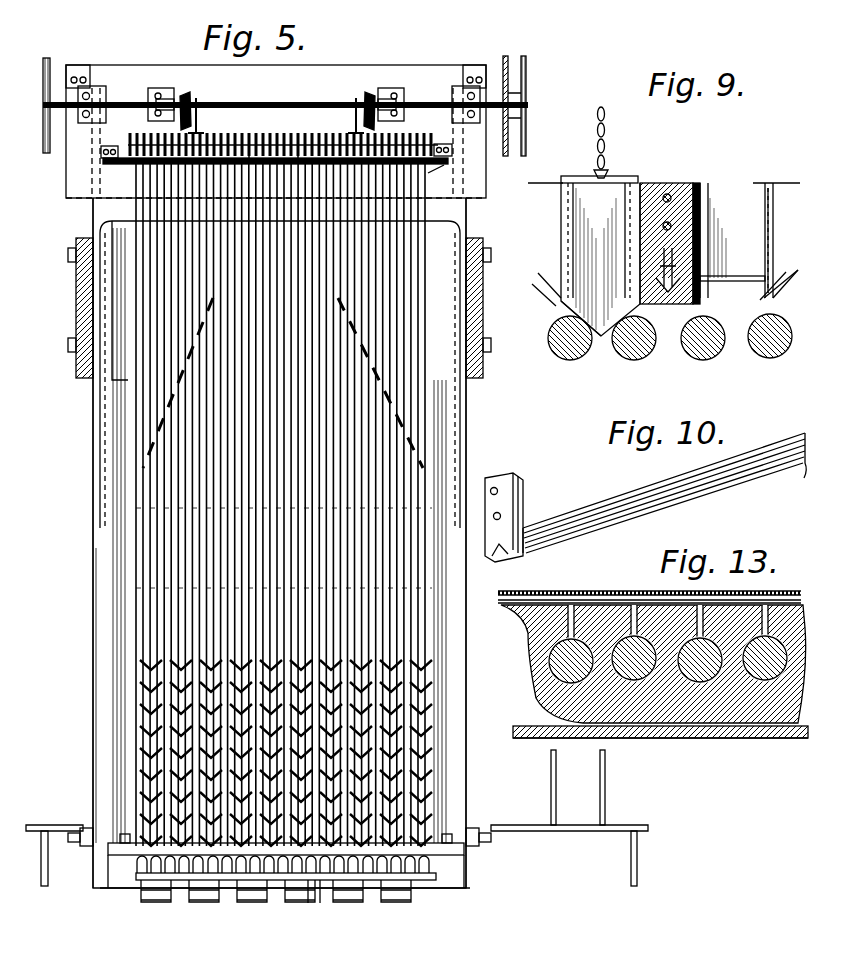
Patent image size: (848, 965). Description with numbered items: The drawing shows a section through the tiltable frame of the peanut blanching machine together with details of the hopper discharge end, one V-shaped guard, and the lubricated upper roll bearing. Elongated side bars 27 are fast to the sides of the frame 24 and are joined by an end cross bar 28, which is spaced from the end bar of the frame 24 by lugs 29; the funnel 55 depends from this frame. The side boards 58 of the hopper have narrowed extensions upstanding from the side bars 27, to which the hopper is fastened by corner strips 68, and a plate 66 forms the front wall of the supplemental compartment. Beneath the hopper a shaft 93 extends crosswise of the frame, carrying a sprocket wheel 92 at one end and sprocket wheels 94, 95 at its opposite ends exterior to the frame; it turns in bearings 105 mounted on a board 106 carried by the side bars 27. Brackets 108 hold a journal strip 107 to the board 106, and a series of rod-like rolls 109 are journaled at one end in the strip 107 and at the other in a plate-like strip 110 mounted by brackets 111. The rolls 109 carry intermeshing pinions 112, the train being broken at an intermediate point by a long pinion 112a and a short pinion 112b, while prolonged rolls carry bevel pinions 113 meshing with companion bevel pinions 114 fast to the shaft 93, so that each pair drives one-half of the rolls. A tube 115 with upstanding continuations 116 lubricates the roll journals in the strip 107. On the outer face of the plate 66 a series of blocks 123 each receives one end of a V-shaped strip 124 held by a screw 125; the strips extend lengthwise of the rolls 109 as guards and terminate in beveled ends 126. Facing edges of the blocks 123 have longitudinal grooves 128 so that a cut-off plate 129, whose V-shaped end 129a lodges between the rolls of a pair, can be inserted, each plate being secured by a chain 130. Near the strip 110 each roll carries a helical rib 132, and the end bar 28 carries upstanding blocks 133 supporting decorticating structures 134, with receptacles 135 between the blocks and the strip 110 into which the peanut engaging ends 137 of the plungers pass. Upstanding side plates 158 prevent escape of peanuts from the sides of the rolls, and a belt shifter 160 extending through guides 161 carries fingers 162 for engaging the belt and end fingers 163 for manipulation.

In FIG. 5, the frame 24 is at (98, 606).
In FIG. 5, the side bars 27 is at (460, 752).
In FIG. 5, the end cross bar 28 is at (118, 882).
In FIG. 5, the lugs 29 is at (442, 852).
In FIG. 5, the funnel 55 is at (120, 340).
In FIG. 5, the side boards 58 is at (476, 284).
In FIG. 9, the plate 66 is at (732, 266).
In FIG. 5, the corner strips 68 is at (477, 345).
In FIG. 5, the sprocket wheel 92 is at (513, 143).
In FIG. 5, the shaft 93 is at (300, 96).
In FIG. 5, the sprocket wheel 94 is at (512, 46).
In FIG. 5, the sprocket wheel 95 is at (38, 50).
In FIG. 5, the bearings 105 is at (440, 82).
In FIG. 5, the board 106 is at (82, 160).
In FIG. 13, the board 106 is at (676, 728).
In FIG. 13, the journal strip 107 is at (722, 708).
In FIG. 5, the brackets 108 is at (450, 143).
In FIG. 5, the rolls 109 is at (420, 420).
In FIG. 9, the rolls 109 is at (745, 340).
In FIG. 13, the rolls 109 is at (700, 660).
In FIG. 5, the journal strip 110 is at (115, 840).
In FIG. 5, the brackets 111 is at (442, 830).
In FIG. 5, the pinions 112 is at (384, 128).
In FIG. 5, the long pinion 112a is at (245, 120).
In FIG. 5, the short pinion 112b is at (290, 128).
In FIG. 5, the bevel pinion 113 is at (348, 90).
In FIG. 5, the bevel pinion 114 is at (362, 85).
In FIG. 5, the tube 115 is at (441, 177).
In FIG. 13, the tube 115 is at (626, 572).
In FIG. 5, the tube continuations 116 is at (440, 155).
In FIG. 9, the blocks 123 is at (770, 176).
In FIG. 10, the blocks 123 is at (492, 515).
In FIG. 9, the V-shaped strip 124 is at (712, 284).
In FIG. 10, the V-shaped strip 124 is at (638, 485).
In FIG. 9, the screw 125 is at (660, 282).
In FIG. 10, the screw 125 is at (486, 548).
In FIG. 10, the beveled end 126 is at (800, 450).
In FIG. 9, the longitudinal grooves 128 is at (712, 232).
In FIG. 9, the cut-off plate 129 is at (600, 256).
In FIG. 9, the V-shaped end 129a is at (590, 330).
In FIG. 9, the chain 130 is at (598, 118).
In FIG. 5, the helical rib 132 is at (425, 712).
In FIG. 5, the upstanding blocks 133 is at (165, 866).
In FIG. 5, the decorticating structure 134 is at (412, 888).
In FIG. 5, the receptacle 135 is at (268, 868).
In FIG. 5, the peanut engaging ends 137 is at (332, 890).
In FIG. 5, the side plates 158 is at (438, 656).
In FIG. 13, the side plates 158 is at (642, 664).
In FIG. 5, the belt shifter 160 is at (580, 824).
In FIG. 5, the guides 161 is at (484, 820).
In FIG. 5, the fingers 162 is at (584, 764).
In FIG. 5, the fingers 163 is at (648, 862).